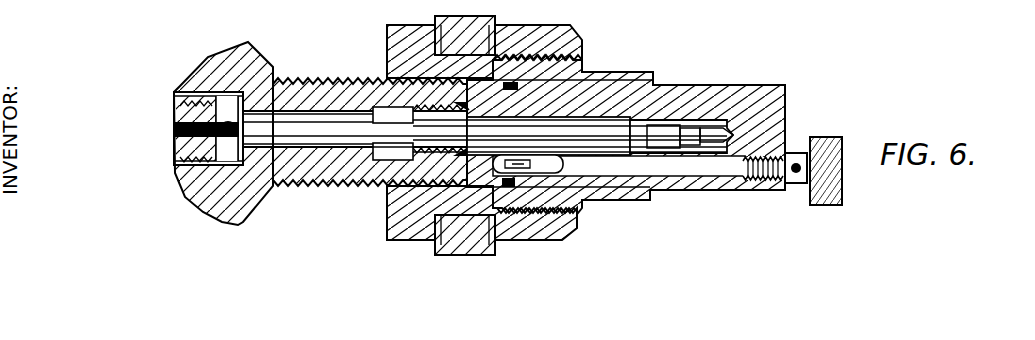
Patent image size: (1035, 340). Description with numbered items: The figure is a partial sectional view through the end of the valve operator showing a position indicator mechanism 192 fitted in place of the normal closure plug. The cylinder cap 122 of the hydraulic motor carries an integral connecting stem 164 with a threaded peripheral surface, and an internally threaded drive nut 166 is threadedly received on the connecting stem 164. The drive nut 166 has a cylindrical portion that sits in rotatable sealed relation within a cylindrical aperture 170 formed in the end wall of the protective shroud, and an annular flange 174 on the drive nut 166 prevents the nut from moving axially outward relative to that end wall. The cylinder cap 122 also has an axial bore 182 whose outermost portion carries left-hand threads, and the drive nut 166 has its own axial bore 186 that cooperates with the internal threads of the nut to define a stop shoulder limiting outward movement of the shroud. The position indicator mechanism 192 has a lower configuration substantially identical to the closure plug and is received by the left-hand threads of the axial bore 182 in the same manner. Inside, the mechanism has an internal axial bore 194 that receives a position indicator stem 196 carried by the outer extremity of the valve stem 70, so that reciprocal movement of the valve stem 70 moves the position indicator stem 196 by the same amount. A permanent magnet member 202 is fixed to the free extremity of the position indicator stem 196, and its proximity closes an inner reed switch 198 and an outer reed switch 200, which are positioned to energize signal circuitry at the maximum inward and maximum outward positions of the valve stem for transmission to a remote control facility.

The valve stem 70 is at (182, 143).
The cylinder cap 122 is at (207, 68).
The connecting stem 164 is at (333, 93).
The drive nut 166 is at (397, 36).
The cylindrical aperture 170 is at (465, 210).
The annular flange 174 is at (388, 228).
The axial bore 182 is at (348, 150).
The axial bore 186 is at (578, 85).
The position indicator mechanism 192 is at (720, 102).
The internal axial bore 194 is at (596, 125).
The position indicator stem 196 is at (630, 125).
The inner reed switch 198 is at (533, 163).
The outer reed switch 200 is at (695, 166).
The permanent magnet member 202 is at (702, 137).